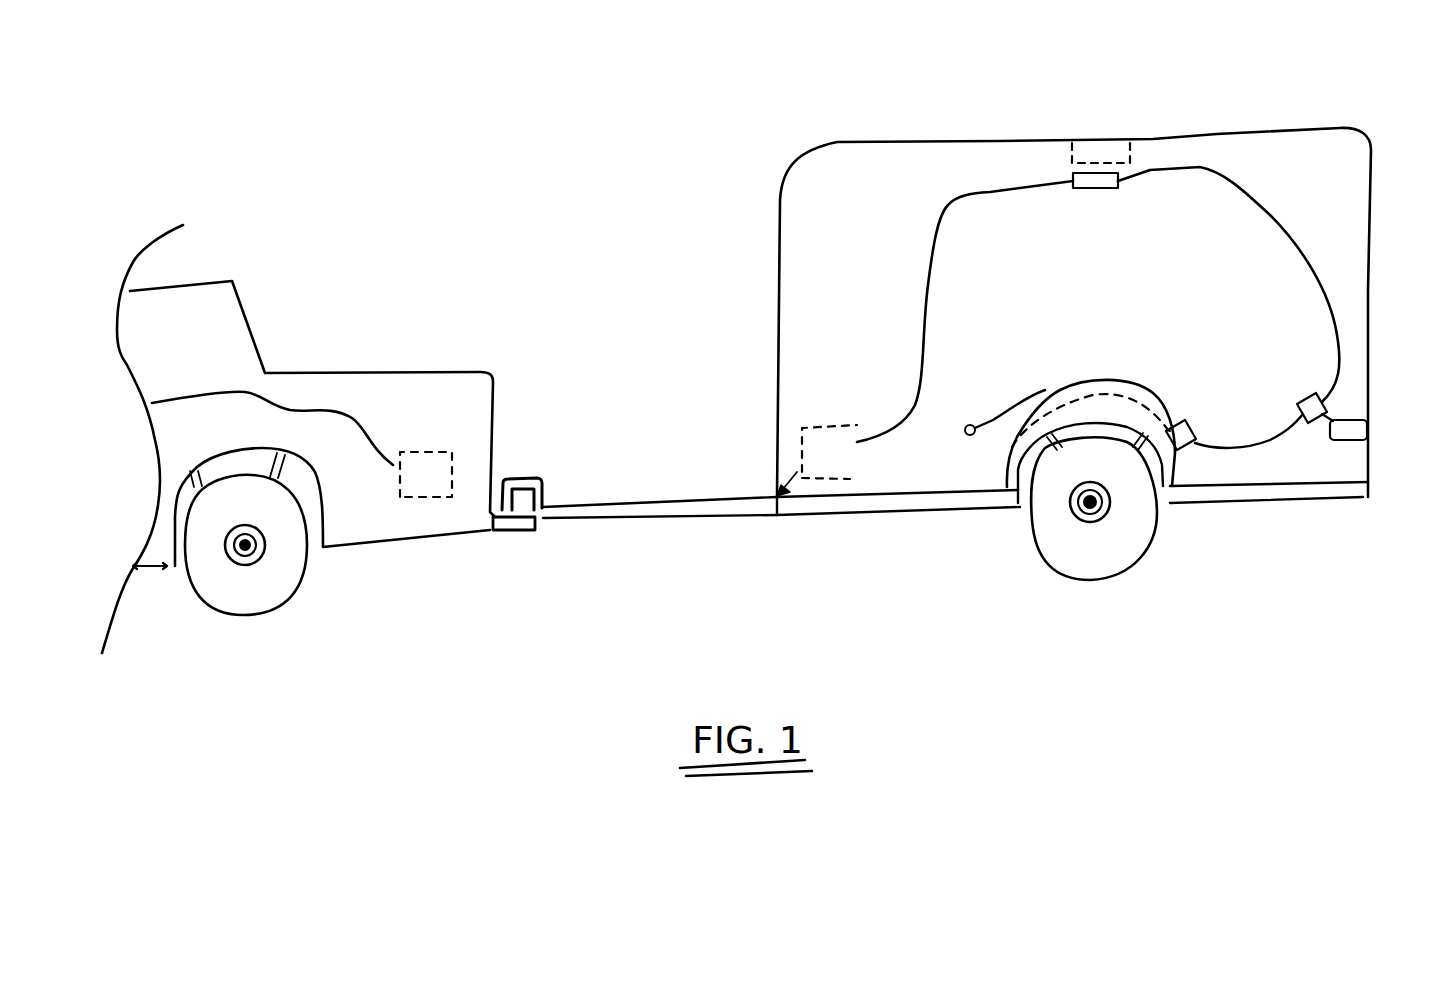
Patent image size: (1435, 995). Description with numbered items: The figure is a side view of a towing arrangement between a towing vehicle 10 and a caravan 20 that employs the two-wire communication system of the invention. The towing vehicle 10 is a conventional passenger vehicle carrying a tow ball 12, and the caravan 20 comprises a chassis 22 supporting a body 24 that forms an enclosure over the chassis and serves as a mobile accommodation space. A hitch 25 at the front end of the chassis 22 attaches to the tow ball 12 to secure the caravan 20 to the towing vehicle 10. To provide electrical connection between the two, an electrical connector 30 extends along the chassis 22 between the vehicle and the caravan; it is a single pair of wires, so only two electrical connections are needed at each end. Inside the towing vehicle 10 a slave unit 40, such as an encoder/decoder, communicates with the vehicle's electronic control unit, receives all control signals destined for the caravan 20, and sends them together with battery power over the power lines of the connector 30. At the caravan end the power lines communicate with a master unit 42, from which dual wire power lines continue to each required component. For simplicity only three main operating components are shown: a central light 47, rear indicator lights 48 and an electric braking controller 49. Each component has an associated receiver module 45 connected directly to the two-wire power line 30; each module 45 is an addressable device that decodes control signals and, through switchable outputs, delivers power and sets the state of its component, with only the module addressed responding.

The towing vehicle 10 is at (312, 275).
The tow ball 12 is at (512, 536).
The caravan 20 is at (982, 100).
The chassis 22 is at (768, 513).
The body 24 is at (1232, 170).
The hitch 25 is at (532, 479).
The electrical connector 30 is at (653, 512).
The slave unit 40 is at (418, 497).
The master unit 42 is at (838, 462).
The receiver module 45 is at (1098, 193).
The central light 47 is at (1107, 145).
The rear indicator lights 48 is at (1358, 427).
The electric braking controller 49 is at (1007, 487).